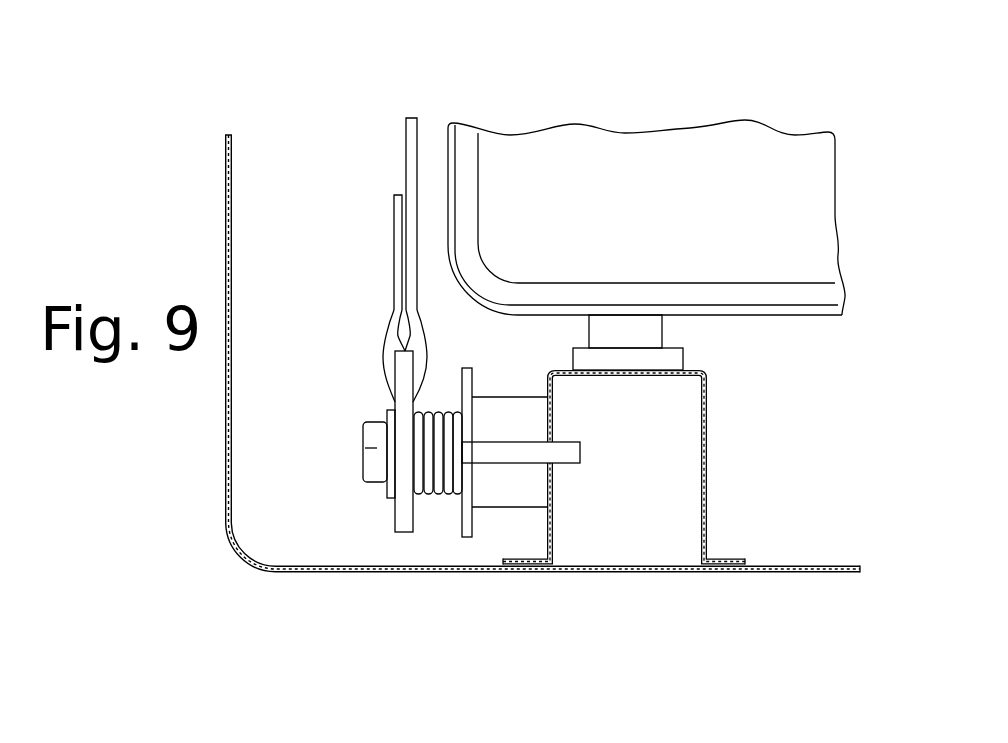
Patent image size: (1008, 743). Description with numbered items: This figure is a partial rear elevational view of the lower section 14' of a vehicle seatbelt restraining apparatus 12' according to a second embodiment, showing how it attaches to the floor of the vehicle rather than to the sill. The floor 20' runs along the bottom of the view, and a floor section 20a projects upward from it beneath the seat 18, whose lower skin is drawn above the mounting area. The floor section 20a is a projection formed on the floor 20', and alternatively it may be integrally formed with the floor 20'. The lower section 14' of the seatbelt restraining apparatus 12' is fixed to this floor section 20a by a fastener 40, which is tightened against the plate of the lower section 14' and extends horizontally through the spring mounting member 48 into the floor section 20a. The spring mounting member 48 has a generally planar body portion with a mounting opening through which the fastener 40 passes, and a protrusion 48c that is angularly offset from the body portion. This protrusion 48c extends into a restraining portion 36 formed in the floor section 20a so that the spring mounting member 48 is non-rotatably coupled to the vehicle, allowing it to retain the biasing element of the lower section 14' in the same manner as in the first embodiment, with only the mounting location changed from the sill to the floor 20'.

The vehicle seatbelt restraining apparatus 12' is at (665, 194).
The seat 18 is at (795, 172).
The lower section 14' is at (353, 325).
The spring mounting member 48 is at (467, 368).
The fastener 40 is at (375, 448).
The restraining portion 36 is at (553, 462).
The floor section 20a is at (707, 405).
The floor 20' is at (549, 354).
The protrusion 48c is at (525, 453).